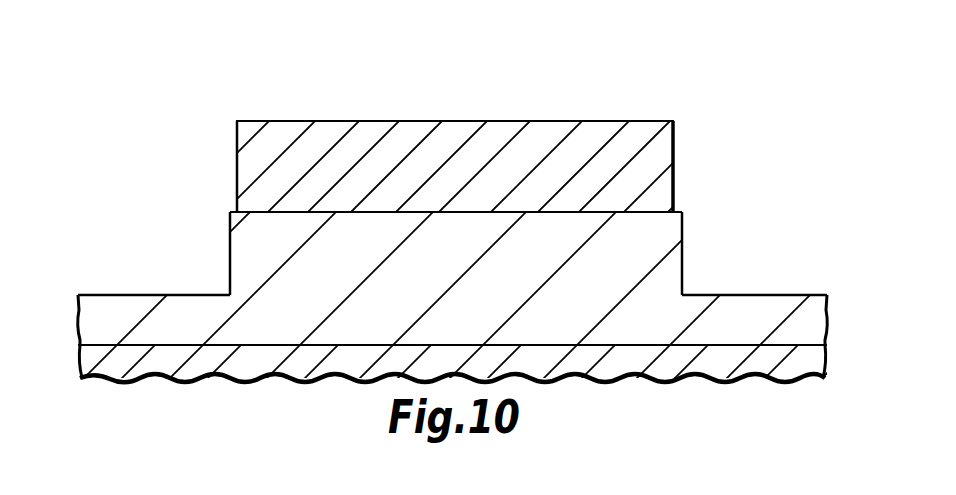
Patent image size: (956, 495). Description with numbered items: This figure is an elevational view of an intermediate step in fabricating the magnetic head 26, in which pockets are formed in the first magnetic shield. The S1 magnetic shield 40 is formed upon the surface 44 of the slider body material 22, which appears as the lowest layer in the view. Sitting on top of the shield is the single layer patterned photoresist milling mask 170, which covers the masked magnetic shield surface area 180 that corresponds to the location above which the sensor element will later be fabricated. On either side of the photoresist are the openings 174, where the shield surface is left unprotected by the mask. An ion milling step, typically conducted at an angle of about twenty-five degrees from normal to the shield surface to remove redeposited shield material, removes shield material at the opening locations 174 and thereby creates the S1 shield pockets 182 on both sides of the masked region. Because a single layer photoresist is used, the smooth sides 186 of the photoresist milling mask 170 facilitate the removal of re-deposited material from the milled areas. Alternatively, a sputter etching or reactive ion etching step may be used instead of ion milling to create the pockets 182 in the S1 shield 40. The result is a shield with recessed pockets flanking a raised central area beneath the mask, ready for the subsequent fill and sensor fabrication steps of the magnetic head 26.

The patterned photoresist milling mask 170 is at (559, 126).
The magnetic head 26 is at (284, 106).
The smooth sides 186 is at (236, 184).
The masked magnetic shield surface area 180 is at (468, 213).
The S1 magnetic shield 40 is at (617, 292).
The S1 shield pockets 182 is at (134, 282).
The openings 174 is at (126, 184).
The surface of the slider body material 44 is at (457, 344).
The slider body material 22 is at (715, 366).